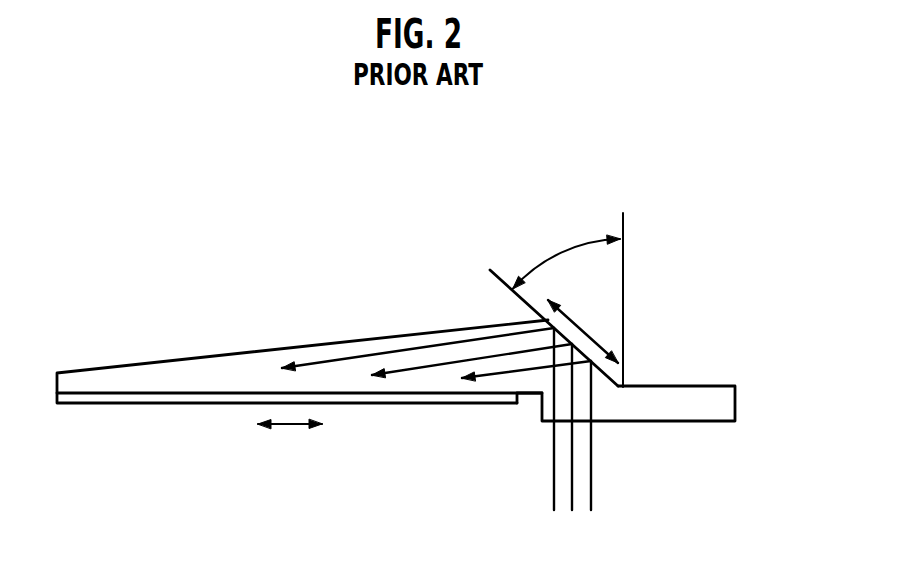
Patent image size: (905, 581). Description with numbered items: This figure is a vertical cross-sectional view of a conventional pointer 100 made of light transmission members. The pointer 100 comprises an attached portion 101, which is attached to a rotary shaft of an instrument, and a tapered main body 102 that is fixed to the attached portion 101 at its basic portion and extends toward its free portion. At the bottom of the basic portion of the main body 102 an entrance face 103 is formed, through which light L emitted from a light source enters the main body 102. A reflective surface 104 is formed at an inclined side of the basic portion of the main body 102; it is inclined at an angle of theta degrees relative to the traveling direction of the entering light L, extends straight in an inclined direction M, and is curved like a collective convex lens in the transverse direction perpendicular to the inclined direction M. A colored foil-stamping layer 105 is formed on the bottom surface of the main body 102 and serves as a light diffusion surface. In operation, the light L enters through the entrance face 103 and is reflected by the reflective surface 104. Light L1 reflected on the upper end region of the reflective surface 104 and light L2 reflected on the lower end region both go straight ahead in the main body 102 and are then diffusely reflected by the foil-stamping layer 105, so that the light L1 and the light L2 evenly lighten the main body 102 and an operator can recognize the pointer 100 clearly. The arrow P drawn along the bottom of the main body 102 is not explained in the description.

The pointer 100 is at (113, 246).
The attached portion 101 is at (722, 401).
The main body 102 is at (193, 373).
The entrance face 103 is at (610, 425).
The reflective surface 104 is at (598, 343).
The foil-stamping layer 105 is at (168, 405).
The light L is at (591, 472).
The light reflected on upper end region L1 is at (370, 355).
The light reflected on lower end region L2 is at (535, 372).
The inclined direction M is at (588, 337).
The plate movement direction P is at (290, 439).